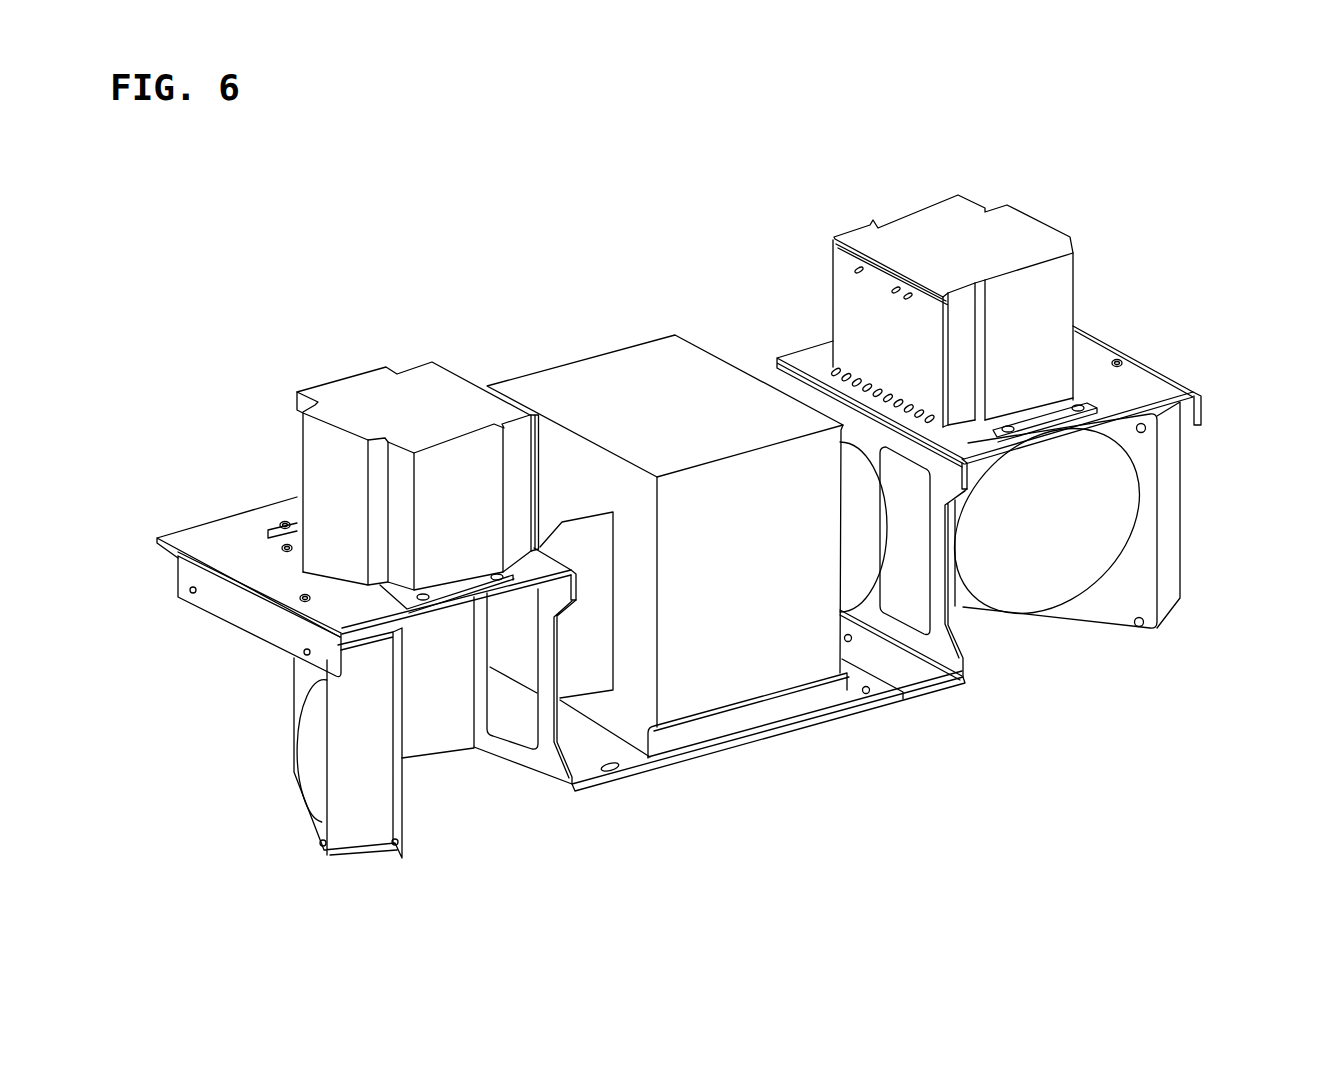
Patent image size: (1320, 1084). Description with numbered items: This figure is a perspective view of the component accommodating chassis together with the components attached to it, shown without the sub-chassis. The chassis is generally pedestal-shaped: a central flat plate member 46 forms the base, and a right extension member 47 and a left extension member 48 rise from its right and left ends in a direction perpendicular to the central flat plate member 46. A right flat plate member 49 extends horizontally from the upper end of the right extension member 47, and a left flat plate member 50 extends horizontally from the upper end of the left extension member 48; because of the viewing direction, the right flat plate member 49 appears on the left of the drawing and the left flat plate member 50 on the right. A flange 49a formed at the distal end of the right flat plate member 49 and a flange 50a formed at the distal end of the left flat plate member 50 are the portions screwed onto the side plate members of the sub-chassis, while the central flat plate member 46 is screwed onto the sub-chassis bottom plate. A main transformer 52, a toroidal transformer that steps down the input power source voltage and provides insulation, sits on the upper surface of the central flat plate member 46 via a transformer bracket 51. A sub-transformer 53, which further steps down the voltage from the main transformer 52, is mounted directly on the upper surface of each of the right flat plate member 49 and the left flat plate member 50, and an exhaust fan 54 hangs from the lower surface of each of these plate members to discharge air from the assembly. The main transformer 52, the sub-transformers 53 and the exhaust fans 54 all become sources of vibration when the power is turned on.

The central flat plate member 46 is at (767, 743).
The right extension member 47 is at (546, 758).
The left extension member 48 is at (940, 643).
The right flat plate member 49 is at (222, 540).
The flange 49a is at (232, 605).
The left flat plate member 50 is at (1145, 375).
The flange 50a is at (1203, 410).
The transformer bracket 51 is at (590, 751).
The main transformer 52 is at (642, 372).
The sub-transformer 53 is at (365, 388).
The exhaust fan 54 is at (352, 826).